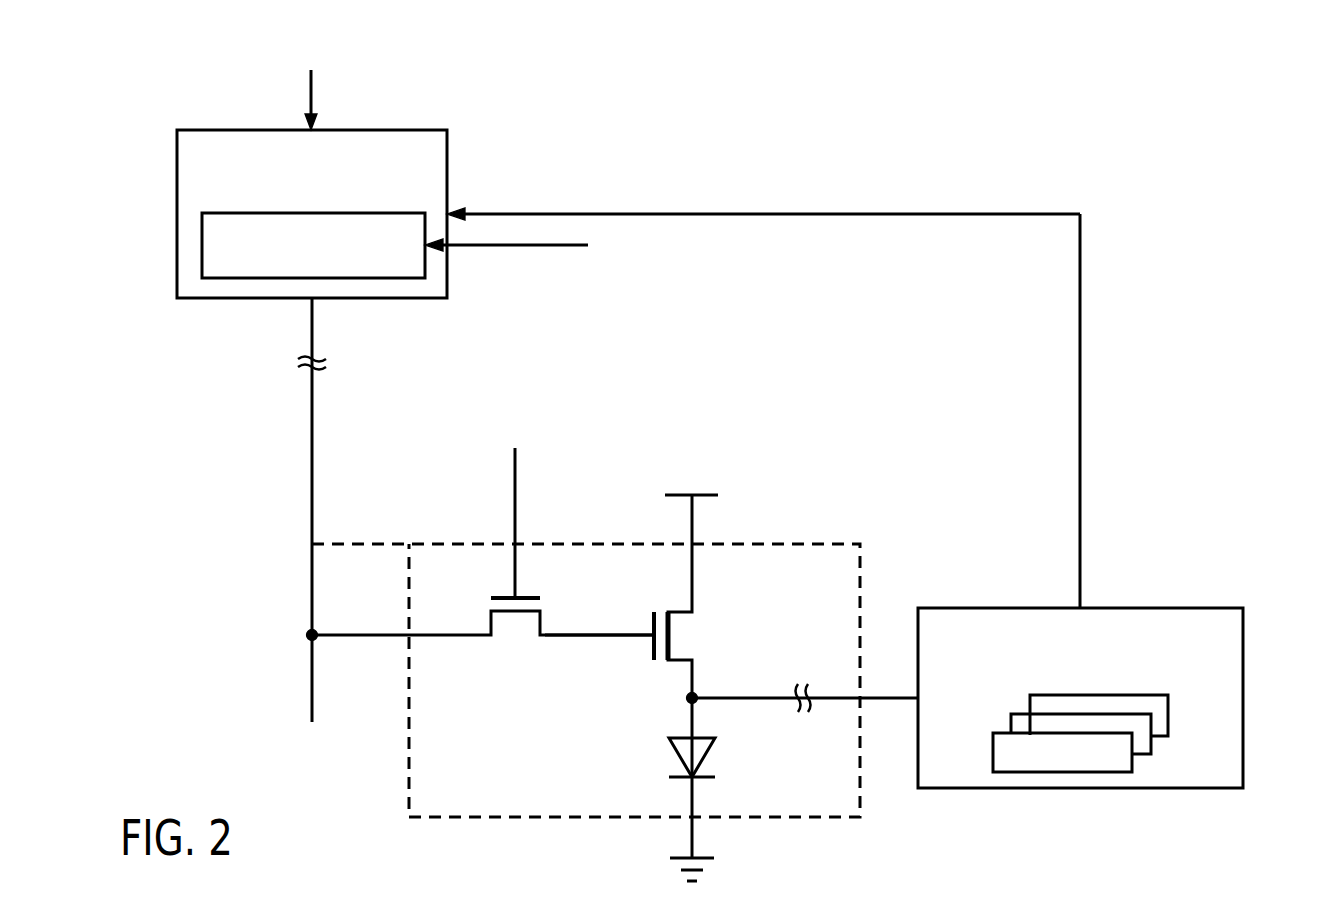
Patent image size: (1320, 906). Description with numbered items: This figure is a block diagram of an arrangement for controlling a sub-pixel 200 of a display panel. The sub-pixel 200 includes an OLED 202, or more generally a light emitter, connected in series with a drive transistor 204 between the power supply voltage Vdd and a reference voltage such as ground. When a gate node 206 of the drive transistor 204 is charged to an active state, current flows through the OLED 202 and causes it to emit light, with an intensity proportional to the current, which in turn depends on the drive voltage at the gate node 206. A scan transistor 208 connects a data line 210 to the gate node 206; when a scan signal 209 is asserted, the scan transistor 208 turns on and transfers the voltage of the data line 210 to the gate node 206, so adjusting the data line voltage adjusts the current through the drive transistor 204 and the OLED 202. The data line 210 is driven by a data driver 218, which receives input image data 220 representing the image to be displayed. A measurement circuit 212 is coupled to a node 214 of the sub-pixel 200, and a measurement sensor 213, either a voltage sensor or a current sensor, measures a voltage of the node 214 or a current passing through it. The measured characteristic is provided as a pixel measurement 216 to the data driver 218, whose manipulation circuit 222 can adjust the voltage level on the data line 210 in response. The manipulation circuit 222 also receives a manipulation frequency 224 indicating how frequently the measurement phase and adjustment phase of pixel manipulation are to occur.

The sub-pixel 200 is at (637, 820).
The OLED 202 is at (702, 757).
The drive transistor 204 is at (692, 640).
The gate node 206 is at (600, 635).
The scan transistor 208 is at (520, 637).
The scan signal 209 is at (515, 497).
The data line 210 is at (312, 590).
The measurement circuit 212 is at (1080, 788).
The measurement sensor 213 is at (992, 752).
The node 214 is at (690, 718).
The pixel measurement 216 is at (763, 394).
The data driver 218 is at (177, 213).
The input image data 220 is at (312, 83).
The manipulation circuit 222 is at (202, 247).
The manipulation frequency 224 is at (602, 263).